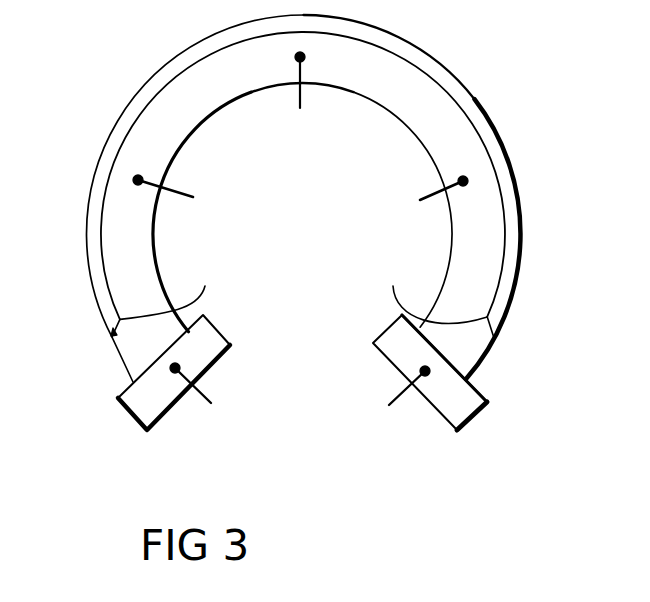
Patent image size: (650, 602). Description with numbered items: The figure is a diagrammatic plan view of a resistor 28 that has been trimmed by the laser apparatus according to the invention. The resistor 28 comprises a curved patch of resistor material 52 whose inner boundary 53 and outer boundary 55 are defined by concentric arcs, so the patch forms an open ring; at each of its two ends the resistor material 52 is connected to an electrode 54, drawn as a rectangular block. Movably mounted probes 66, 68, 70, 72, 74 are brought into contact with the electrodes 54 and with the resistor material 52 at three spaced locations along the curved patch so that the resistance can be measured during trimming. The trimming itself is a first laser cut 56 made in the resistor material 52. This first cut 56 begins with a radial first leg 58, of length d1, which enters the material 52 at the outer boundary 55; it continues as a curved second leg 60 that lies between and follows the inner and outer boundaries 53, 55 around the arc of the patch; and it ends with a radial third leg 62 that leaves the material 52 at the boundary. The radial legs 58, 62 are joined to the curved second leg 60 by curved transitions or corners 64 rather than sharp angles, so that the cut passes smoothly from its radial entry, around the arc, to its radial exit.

The resistor 28 is at (524, 28).
The resistor material 52 is at (468, 108).
The inner boundary 53 is at (157, 250).
The electrodes 54 is at (219, 331).
The outer boundary 55 is at (111, 136).
The first laser cut 56 is at (103, 190).
The radial first leg 58 is at (111, 340).
The curved second leg 60 is at (192, 60).
The radial third leg 62 is at (495, 340).
The curved transitions or corners 64 is at (303, 293).
The probe 66 is at (212, 402).
The probe 68 is at (191, 194).
The probe 70 is at (301, 103).
The probe 72 is at (420, 197).
The probe 74 is at (400, 393).